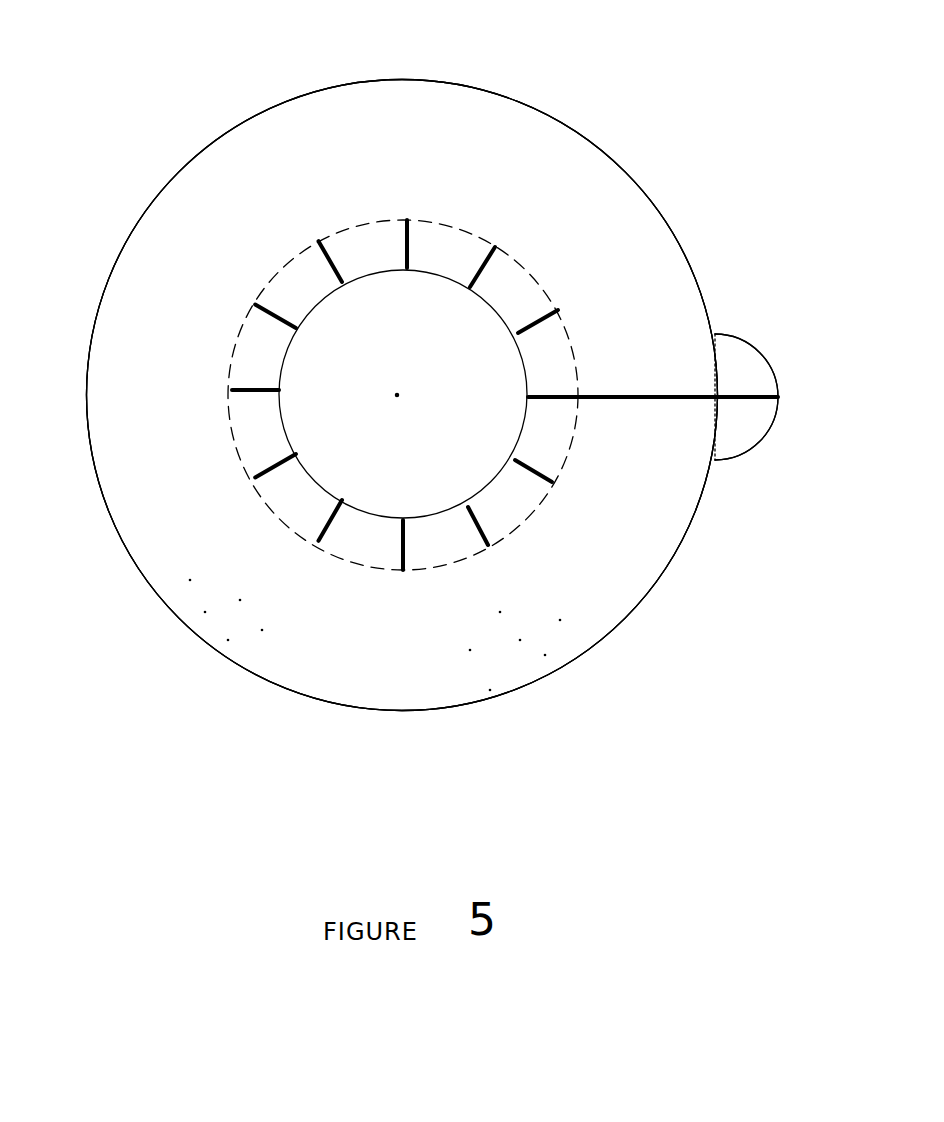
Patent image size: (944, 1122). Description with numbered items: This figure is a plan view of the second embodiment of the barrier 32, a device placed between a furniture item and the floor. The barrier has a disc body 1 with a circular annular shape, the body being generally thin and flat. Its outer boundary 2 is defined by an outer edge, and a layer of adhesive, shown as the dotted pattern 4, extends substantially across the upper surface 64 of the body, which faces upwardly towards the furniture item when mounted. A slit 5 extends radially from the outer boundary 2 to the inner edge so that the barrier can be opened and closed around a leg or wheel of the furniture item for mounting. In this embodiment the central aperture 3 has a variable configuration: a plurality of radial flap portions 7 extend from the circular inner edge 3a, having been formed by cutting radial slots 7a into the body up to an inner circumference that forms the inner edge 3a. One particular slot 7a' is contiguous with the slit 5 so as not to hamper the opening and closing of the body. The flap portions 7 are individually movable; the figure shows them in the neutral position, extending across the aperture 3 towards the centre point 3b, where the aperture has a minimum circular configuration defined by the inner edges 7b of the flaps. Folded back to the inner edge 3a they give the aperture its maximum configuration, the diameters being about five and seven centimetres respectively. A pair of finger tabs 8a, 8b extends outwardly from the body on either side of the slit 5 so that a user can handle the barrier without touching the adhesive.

The barrier 32 is at (180, 70).
The disc body 1 is at (183, 197).
The outer boundary 2 is at (86, 374).
The central aperture 3 is at (480, 464).
The inner edge 3a is at (513, 531).
The centre point 3b is at (394, 402).
The layer of adhesive 4 is at (497, 667).
The slit 5 is at (672, 392).
The upper surface 64 is at (221, 617).
The flap portions 7 is at (507, 278).
The radial slots 7a is at (630, 270).
The slot contiguous with the slit 7a' is at (653, 325).
The inner edges of the flap portions 7b is at (445, 290).
The finger tab 8a is at (758, 372).
The finger tab 8b is at (757, 422).